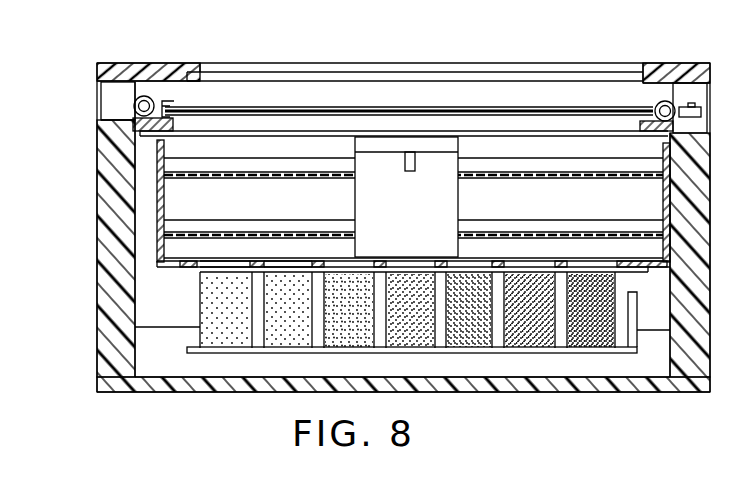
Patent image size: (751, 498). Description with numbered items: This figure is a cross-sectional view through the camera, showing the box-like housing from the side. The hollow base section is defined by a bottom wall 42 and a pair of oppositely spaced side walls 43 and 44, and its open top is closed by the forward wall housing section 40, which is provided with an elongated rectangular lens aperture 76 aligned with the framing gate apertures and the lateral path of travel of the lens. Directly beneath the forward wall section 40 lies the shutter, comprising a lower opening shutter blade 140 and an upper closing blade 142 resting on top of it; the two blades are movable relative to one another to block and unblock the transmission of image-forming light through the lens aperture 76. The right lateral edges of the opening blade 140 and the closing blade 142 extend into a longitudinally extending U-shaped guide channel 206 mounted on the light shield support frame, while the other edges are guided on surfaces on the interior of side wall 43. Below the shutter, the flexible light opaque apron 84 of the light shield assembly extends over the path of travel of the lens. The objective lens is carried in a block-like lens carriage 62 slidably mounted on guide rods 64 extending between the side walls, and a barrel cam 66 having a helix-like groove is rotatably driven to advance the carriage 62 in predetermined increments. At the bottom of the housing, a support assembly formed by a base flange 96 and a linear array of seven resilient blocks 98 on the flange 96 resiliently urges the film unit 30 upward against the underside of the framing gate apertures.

The U-shaped guide channel 206 is at (162, 101).
The lens aperture 76 is at (283, 40).
The forward wall housing section 40 is at (663, 63).
The opening shutter blade 140 is at (487, 108).
The closing blade 142 is at (557, 108).
The flexible light opaque apron 84 is at (332, 136).
The guide rods 64 is at (281, 220).
The lens carriage 62 is at (450, 195).
The barrel cam 66 is at (283, 261).
The film unit 30 is at (187, 268).
The side wall 44 is at (97, 223).
The side wall 43 is at (710, 352).
The bottom wall 42 is at (227, 380).
The resilient blocks 98 is at (527, 345).
The base flange 96 is at (590, 352).